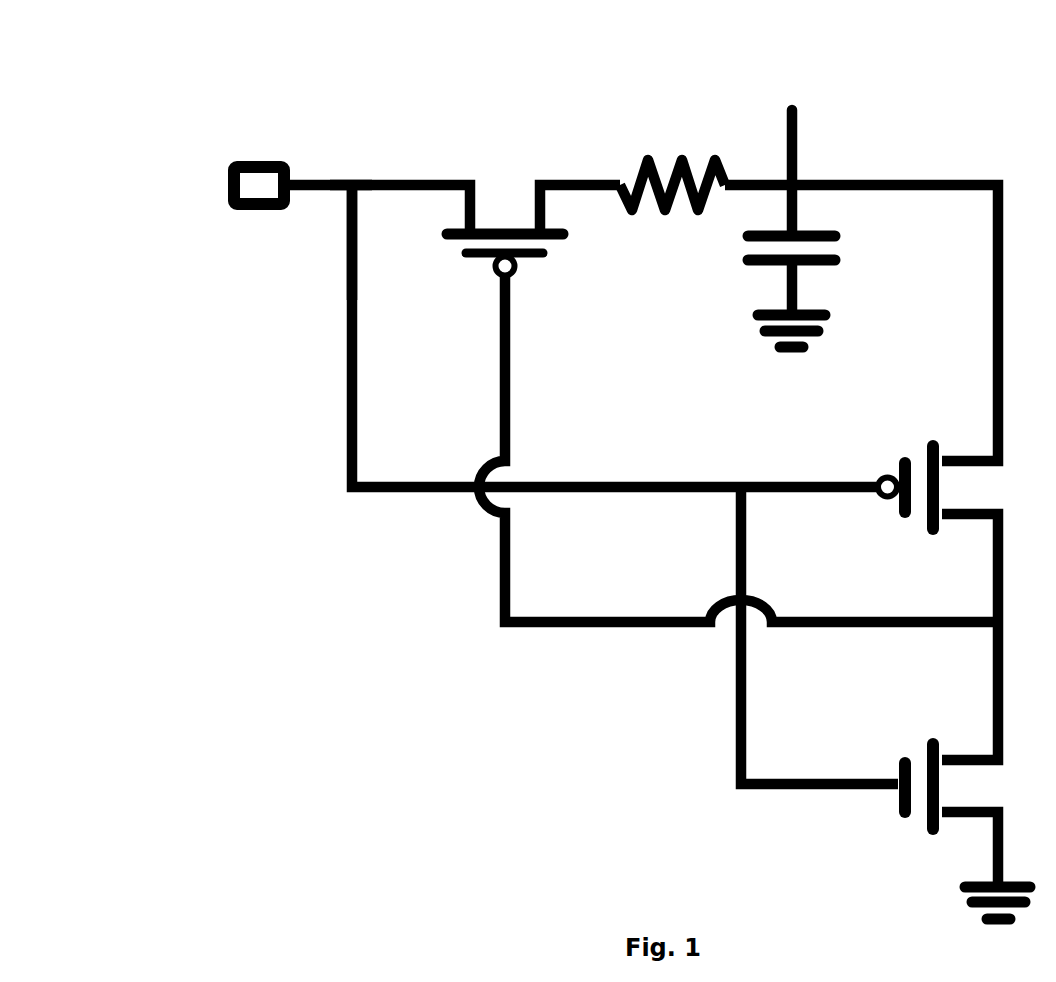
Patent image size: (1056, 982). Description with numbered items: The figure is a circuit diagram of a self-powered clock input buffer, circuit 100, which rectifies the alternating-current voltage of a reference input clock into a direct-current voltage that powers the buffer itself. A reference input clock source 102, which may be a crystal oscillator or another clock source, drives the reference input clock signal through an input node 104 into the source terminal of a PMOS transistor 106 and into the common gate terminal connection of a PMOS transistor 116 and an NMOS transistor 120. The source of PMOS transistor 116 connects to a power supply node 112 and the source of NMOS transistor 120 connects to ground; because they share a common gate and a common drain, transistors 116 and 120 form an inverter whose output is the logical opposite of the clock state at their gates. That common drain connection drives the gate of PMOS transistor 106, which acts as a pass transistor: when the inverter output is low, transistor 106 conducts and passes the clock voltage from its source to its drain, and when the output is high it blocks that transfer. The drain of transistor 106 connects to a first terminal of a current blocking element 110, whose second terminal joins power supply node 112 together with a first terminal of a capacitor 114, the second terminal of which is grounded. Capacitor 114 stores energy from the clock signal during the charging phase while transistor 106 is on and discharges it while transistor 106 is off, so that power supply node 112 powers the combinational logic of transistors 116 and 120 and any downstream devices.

The circuit 100 is at (97, 110).
The reference input clock source 102 is at (228, 166).
The input node 104 is at (343, 178).
The PMOS transistor 106 is at (464, 255).
The current blocking element 110 is at (678, 158).
The power supply node 112 is at (792, 111).
The capacitor 114 is at (853, 220).
The PMOS transistor 116 is at (900, 456).
The NMOS transistor 120 is at (902, 756).